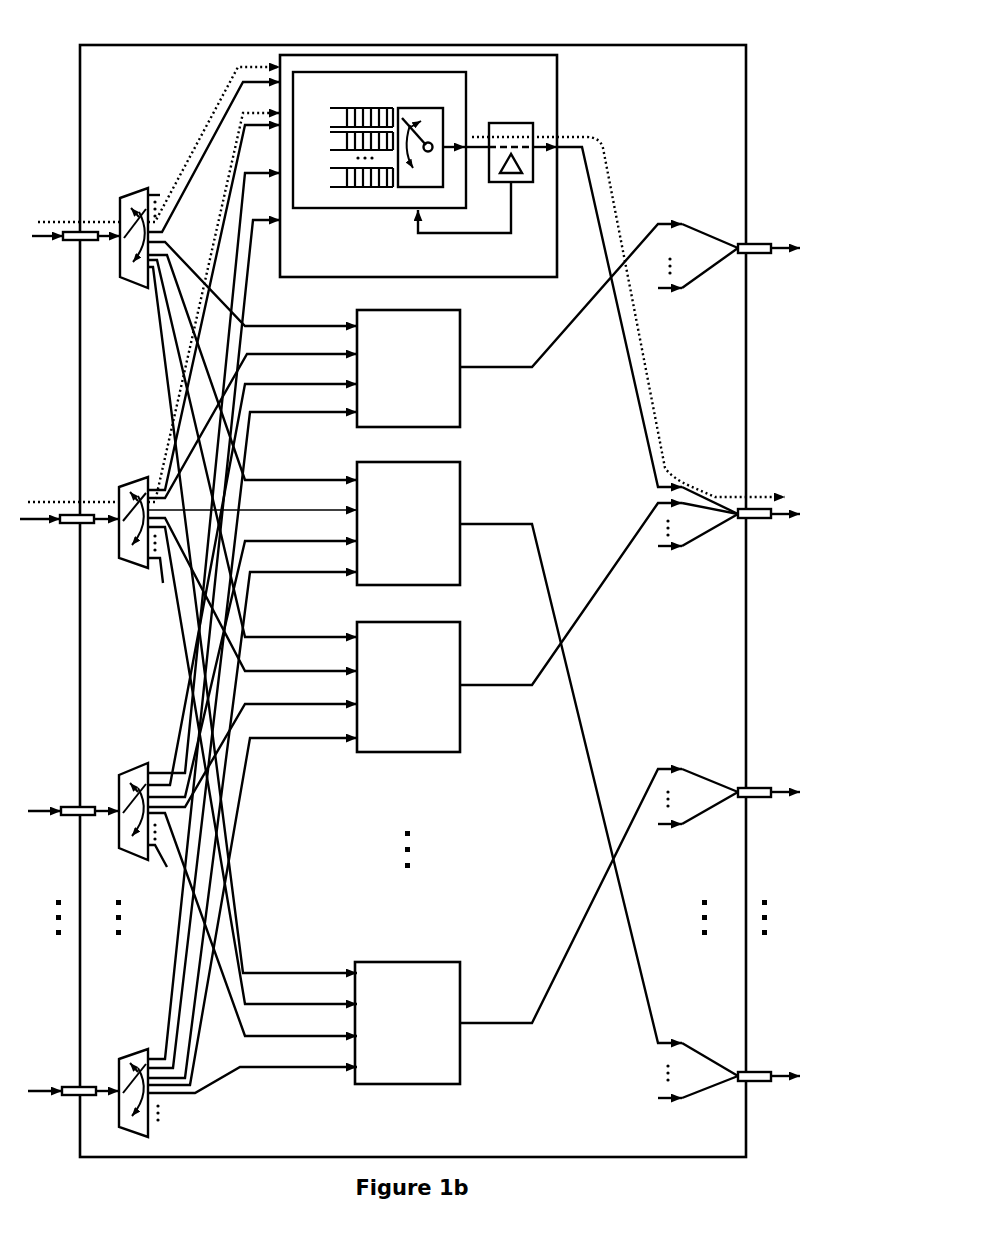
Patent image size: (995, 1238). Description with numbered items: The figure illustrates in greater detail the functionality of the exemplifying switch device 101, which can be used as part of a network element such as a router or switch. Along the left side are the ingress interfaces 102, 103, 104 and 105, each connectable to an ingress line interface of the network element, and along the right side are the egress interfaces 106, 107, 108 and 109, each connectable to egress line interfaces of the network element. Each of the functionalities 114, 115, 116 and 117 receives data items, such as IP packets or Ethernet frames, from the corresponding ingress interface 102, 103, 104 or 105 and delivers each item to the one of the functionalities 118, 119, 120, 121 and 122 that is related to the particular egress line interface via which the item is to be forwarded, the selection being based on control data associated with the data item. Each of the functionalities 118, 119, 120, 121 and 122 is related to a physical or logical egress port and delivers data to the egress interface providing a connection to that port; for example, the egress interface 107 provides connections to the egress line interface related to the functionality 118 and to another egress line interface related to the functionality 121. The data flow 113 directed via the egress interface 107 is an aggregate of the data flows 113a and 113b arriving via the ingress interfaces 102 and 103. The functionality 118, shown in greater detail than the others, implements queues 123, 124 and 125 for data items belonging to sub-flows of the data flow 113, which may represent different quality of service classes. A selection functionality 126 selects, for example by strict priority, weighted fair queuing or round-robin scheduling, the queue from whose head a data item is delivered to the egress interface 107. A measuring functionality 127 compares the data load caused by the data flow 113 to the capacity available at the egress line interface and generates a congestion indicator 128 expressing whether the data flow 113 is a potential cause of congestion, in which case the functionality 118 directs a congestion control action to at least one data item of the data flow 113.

The switch device 101 is at (580, 45).
The ingress interface 102 is at (73, 242).
The ingress interface 103 is at (72, 527).
The ingress interface 104 is at (74, 806).
The ingress interface 105 is at (74, 1086).
The egress interface 106 is at (752, 244).
The egress interface 107 is at (752, 520).
The egress interface 108 is at (752, 788).
The egress interface 109 is at (752, 1072).
The data flow 113 is at (606, 197).
The data flow 113a is at (205, 133).
The data flow 113b is at (160, 468).
The functionality 114 is at (141, 194).
The functionality 115 is at (138, 568).
The functionality 116 is at (144, 766).
The functionality 117 is at (145, 1050).
The functionality 118 is at (557, 110).
The functionality 119 is at (408, 368).
The functionality 120 is at (408, 523).
The functionality 121 is at (408, 687).
The functionality 122 is at (407, 1023).
The queue 123 is at (343, 108).
The queue 124 is at (330, 150).
The queue 125 is at (350, 187).
The selection functionality 126 is at (405, 108).
The measuring functionality 127 is at (500, 123).
The congestion indicator 128 is at (433, 233).